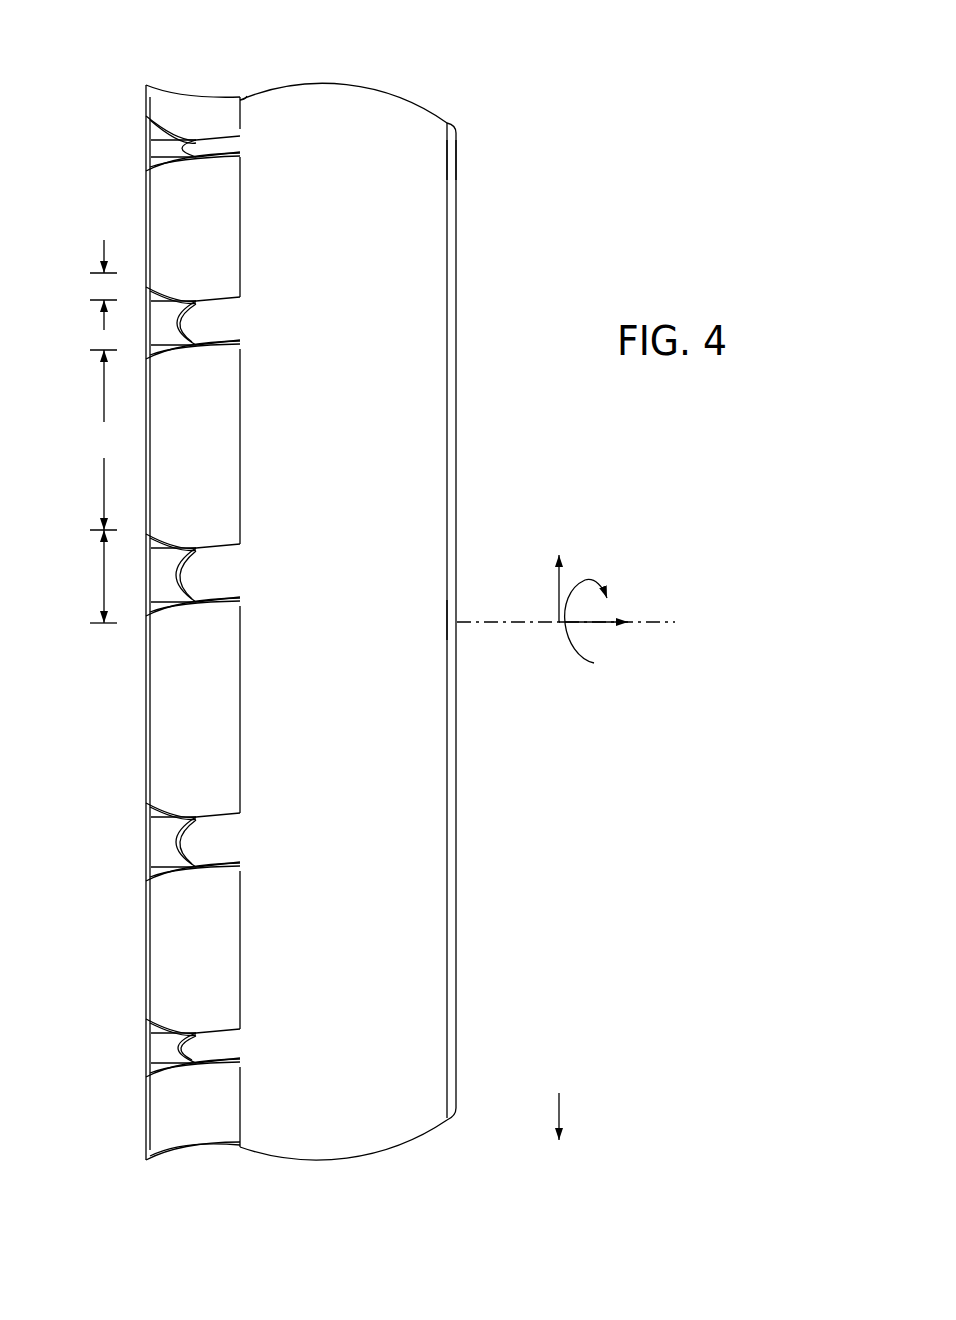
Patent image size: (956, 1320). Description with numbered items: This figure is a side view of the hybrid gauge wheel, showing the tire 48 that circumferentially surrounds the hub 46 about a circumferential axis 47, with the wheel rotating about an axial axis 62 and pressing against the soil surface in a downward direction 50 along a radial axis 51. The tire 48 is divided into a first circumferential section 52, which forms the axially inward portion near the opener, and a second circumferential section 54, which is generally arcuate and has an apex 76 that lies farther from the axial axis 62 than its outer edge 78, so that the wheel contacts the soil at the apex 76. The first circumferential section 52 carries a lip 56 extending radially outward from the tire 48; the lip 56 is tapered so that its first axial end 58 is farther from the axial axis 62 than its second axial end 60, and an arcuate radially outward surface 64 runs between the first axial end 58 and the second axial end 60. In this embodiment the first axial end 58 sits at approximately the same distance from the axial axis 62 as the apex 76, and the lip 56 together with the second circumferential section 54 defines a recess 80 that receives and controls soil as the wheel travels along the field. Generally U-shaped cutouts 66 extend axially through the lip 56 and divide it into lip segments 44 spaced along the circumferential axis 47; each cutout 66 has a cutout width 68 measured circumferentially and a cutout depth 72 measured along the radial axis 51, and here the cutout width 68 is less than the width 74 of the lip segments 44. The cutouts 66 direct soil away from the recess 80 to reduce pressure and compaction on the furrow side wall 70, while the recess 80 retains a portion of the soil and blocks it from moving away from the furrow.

The lip segments 44 is at (146, 228).
The hub 46 is at (458, 414).
The circumferential axis 47 is at (567, 645).
The tire 48 is at (406, 1176).
The downward direction 50 is at (559, 1112).
The radial axis 51 is at (559, 590).
The first circumferential section 52 is at (134, 196).
The second circumferential section 54 is at (419, 65).
The lip 56 is at (139, 100).
The first axial end 58 is at (147, 84).
The second axial end 60 is at (243, 100).
The axial axis 62 is at (657, 623).
The radially outward surface 64 is at (176, 106).
The cutouts 66 is at (138, 140).
The cutout width 68 is at (104, 578).
The side wall 70 is at (228, 1177).
The cutout depth 72 is at (104, 318).
The width of the lip segments 74 is at (165, 446).
The apex 76 is at (353, 82).
The outer edge 78 is at (457, 146).
The recess 80 is at (213, 90).